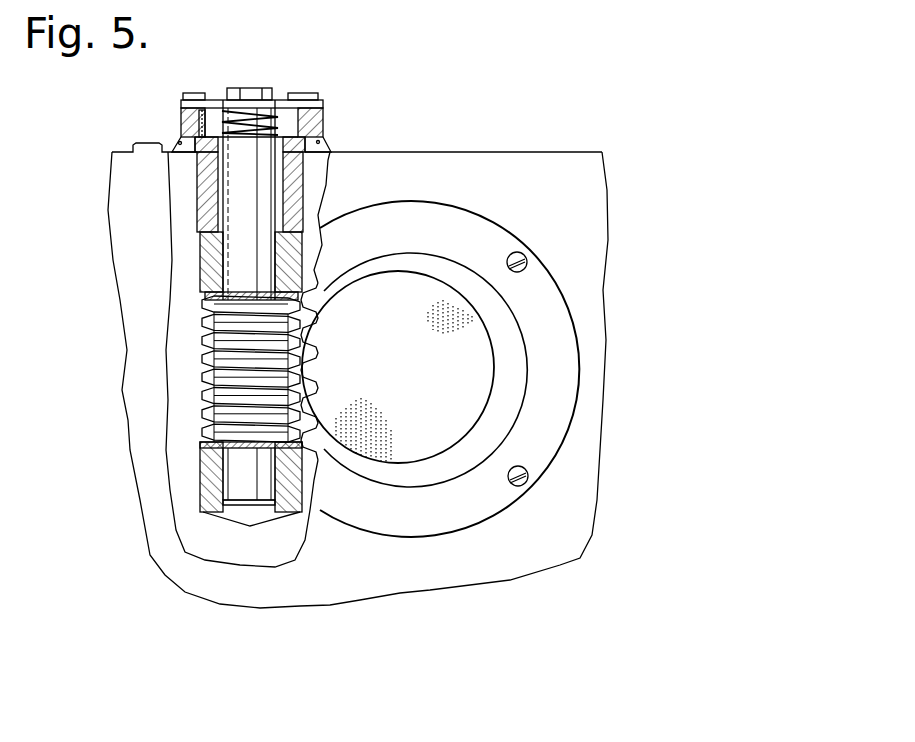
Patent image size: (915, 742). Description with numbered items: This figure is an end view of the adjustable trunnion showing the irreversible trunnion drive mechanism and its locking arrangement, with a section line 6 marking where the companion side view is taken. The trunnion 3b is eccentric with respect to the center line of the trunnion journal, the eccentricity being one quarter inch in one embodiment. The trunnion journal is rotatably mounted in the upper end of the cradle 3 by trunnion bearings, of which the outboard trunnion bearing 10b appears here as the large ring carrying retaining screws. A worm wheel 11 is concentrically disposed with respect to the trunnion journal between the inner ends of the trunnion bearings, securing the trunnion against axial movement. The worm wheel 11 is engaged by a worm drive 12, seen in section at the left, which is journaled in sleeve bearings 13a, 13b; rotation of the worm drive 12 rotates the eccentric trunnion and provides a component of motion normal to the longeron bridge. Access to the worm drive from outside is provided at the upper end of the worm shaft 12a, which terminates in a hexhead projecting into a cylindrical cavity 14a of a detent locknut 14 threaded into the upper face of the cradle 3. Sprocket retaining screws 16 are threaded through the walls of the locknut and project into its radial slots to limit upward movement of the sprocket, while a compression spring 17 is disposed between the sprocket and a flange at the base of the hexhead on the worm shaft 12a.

The cradle 3 is at (554, 150).
The trunnion 3b is at (466, 375).
The section line 6- 6 is at (410, 95).
The outboard trunnion bearing 10b is at (456, 210).
The worm wheel 11 is at (318, 288).
The worm drive 12 is at (212, 355).
The worm shaft 12a is at (256, 186).
The sleeve bearing 13a is at (218, 478).
The sleeve bearing 13b is at (218, 257).
The detent locknut 14 is at (186, 108).
The cylindrical cavity 14a is at (199, 123).
The sprocket retaining screws 16 is at (318, 103).
The compression spring 17 is at (276, 130).